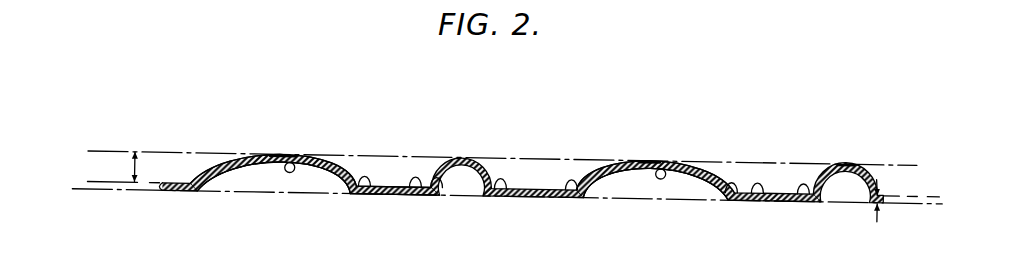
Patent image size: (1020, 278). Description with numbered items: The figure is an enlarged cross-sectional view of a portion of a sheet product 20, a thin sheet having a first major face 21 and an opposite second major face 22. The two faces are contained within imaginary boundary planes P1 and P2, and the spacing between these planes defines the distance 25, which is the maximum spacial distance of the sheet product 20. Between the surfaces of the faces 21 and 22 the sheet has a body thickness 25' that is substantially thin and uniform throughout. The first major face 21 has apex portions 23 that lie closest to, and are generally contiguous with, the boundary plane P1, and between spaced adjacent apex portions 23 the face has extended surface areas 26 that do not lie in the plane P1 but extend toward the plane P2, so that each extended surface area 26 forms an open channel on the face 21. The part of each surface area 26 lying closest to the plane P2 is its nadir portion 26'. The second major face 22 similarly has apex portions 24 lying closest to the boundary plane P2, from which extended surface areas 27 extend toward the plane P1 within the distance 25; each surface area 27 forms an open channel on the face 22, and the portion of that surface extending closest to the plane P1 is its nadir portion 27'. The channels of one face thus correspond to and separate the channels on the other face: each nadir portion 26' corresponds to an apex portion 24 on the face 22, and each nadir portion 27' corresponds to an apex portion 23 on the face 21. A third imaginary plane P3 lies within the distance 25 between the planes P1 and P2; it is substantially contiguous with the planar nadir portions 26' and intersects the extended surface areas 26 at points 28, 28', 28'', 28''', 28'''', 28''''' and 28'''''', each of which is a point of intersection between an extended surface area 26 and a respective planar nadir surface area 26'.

The sheet product 20 is at (593, 145).
The first major face 21 is at (338, 159).
The second major face 22 is at (629, 181).
The apex portions 23 is at (840, 153).
The apex portions 24 is at (389, 191).
The distance 25 is at (141, 148).
The body thickness 25' is at (871, 216).
The extended surface areas 26 is at (582, 158).
The nadir portion 26' is at (586, 212).
The extended surface areas 27 is at (463, 198).
The nadir portion 27' is at (507, 147).
The point of intersection 28 is at (201, 153).
The point of intersection 28' is at (347, 209).
The point of intersection 28'' is at (450, 214).
The point of intersection 28''' is at (503, 216).
The point of intersection 28'''' is at (570, 213).
The point of intersection 28''''' is at (709, 218).
The base junction 28'''''' is at (813, 221).
The imaginary boundary plane P1 is at (503, 155).
The imaginary boundary plane P2 is at (506, 198).
The imaginary plane P3 is at (917, 178).